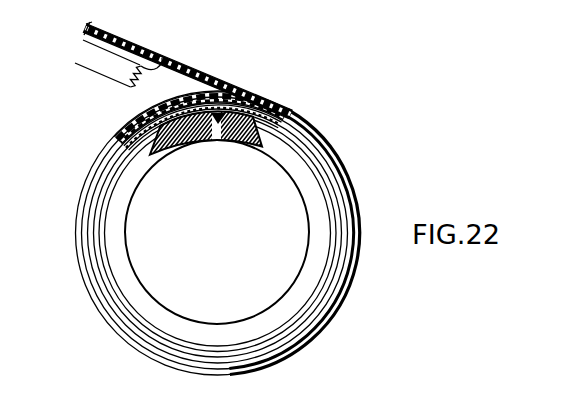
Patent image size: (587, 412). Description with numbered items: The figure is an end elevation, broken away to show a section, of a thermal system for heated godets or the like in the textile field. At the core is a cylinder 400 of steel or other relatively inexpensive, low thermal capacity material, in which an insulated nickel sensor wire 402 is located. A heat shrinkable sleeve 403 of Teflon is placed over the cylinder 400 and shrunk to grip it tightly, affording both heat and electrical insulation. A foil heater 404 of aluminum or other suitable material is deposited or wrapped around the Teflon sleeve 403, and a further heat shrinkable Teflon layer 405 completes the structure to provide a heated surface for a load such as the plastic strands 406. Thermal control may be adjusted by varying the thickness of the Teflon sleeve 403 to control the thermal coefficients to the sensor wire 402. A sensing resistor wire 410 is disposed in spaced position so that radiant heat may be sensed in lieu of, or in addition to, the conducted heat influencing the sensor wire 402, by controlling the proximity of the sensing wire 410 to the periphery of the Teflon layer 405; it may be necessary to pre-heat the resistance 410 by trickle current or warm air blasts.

The cylinder 400 is at (118, 238).
The sensor wire 402 is at (216, 120).
The heat shrinkable sleeve 403 is at (100, 213).
The foil heater 404 is at (98, 196).
The Teflon layer 405 is at (98, 173).
The plastic strands 406 is at (143, 113).
The sensing resistor wire 410 is at (162, 64).